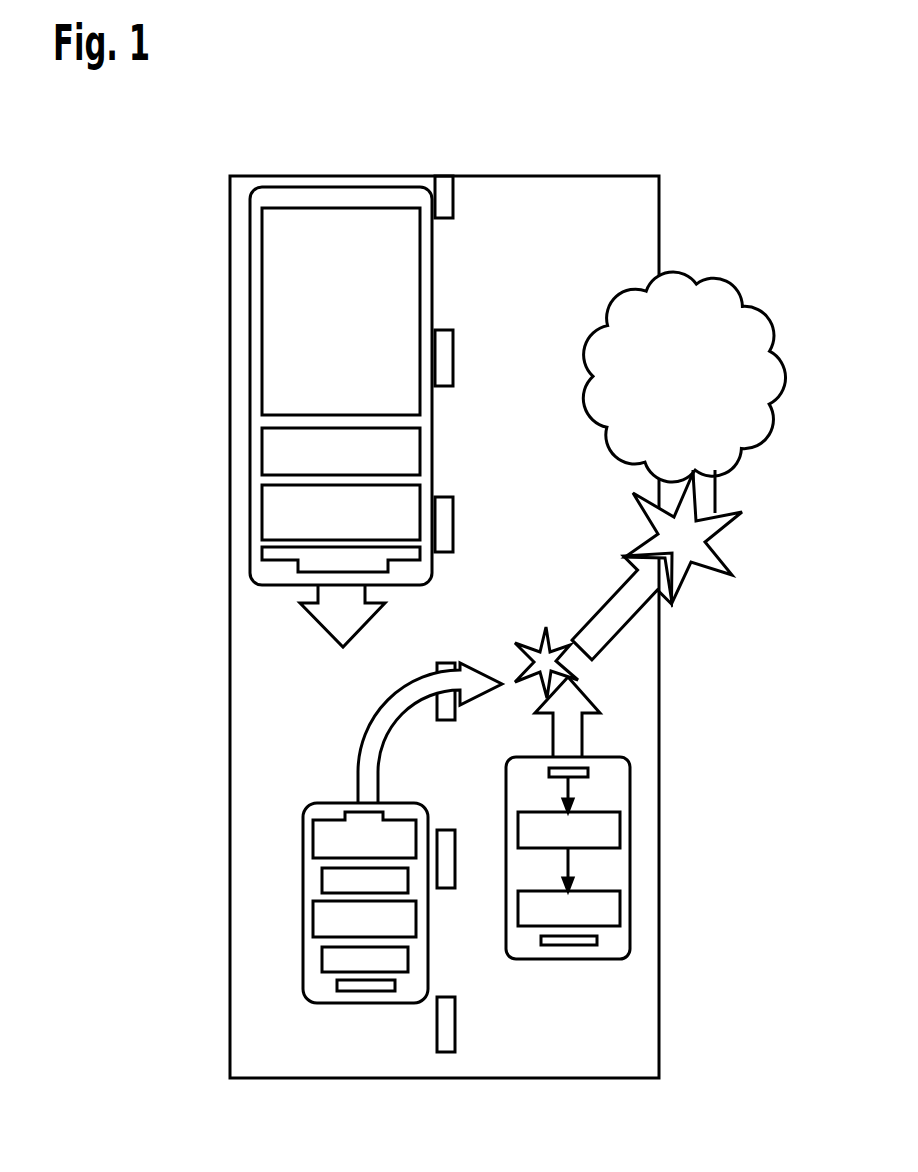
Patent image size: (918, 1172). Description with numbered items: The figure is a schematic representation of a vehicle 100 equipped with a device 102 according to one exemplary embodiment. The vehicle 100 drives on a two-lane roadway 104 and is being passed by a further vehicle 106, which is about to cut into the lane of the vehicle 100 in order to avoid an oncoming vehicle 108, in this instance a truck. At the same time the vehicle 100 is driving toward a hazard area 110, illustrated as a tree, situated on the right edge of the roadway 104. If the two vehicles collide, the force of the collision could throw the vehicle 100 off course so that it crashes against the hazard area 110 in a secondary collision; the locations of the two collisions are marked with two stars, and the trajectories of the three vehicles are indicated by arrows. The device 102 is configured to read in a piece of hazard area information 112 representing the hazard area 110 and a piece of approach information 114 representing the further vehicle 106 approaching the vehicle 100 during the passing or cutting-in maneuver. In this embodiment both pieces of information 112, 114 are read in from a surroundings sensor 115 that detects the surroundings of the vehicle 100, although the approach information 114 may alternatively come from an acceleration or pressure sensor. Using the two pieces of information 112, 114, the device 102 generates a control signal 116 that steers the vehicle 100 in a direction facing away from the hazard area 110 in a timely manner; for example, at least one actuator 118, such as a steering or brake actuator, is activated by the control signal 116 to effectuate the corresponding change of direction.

The vehicle 100 is at (630, 808).
The device 102 is at (620, 830).
The two-lane roadway 104 is at (658, 203).
The further vehicle 106 is at (303, 900).
The oncoming vehicle 108 is at (250, 256).
The hazard area 110 is at (740, 277).
The piece of hazard area information 112 is at (694, 796).
The piece of approach information 114 is at (572, 786).
The surroundings sensor 115 is at (588, 772).
The control signal 116 is at (575, 860).
The actuator 118 is at (620, 908).